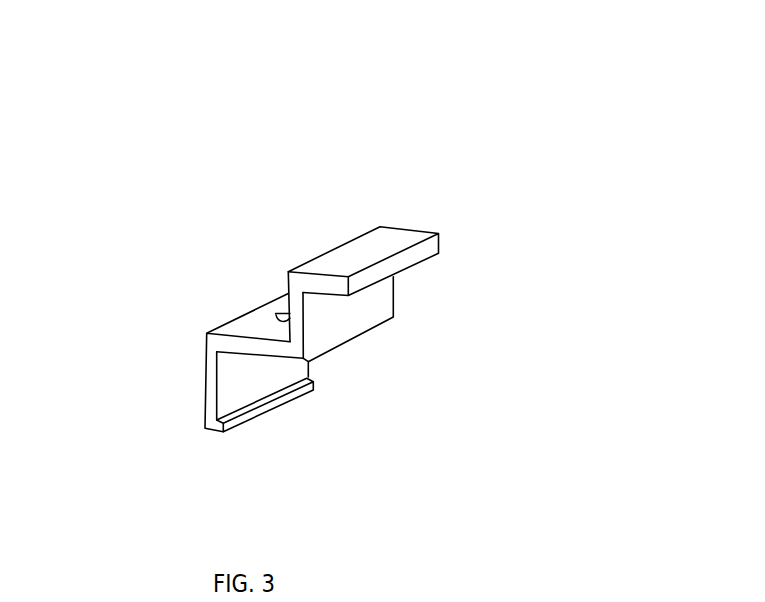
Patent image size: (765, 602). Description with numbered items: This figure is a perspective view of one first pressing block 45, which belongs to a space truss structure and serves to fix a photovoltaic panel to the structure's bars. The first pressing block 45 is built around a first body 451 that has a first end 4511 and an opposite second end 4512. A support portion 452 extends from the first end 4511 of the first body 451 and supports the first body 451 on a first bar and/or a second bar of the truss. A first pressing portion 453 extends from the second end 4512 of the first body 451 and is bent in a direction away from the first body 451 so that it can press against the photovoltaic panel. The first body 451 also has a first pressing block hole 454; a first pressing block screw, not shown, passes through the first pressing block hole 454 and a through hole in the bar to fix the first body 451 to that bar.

The first pressing block 45 is at (292, 84).
The first body 451 is at (275, 352).
The first end 4511 is at (217, 348).
The second end 4512 is at (294, 341).
The support portion 452 is at (213, 378).
The first pressing portion 453 is at (333, 290).
The first pressing block hole 454 is at (277, 315).